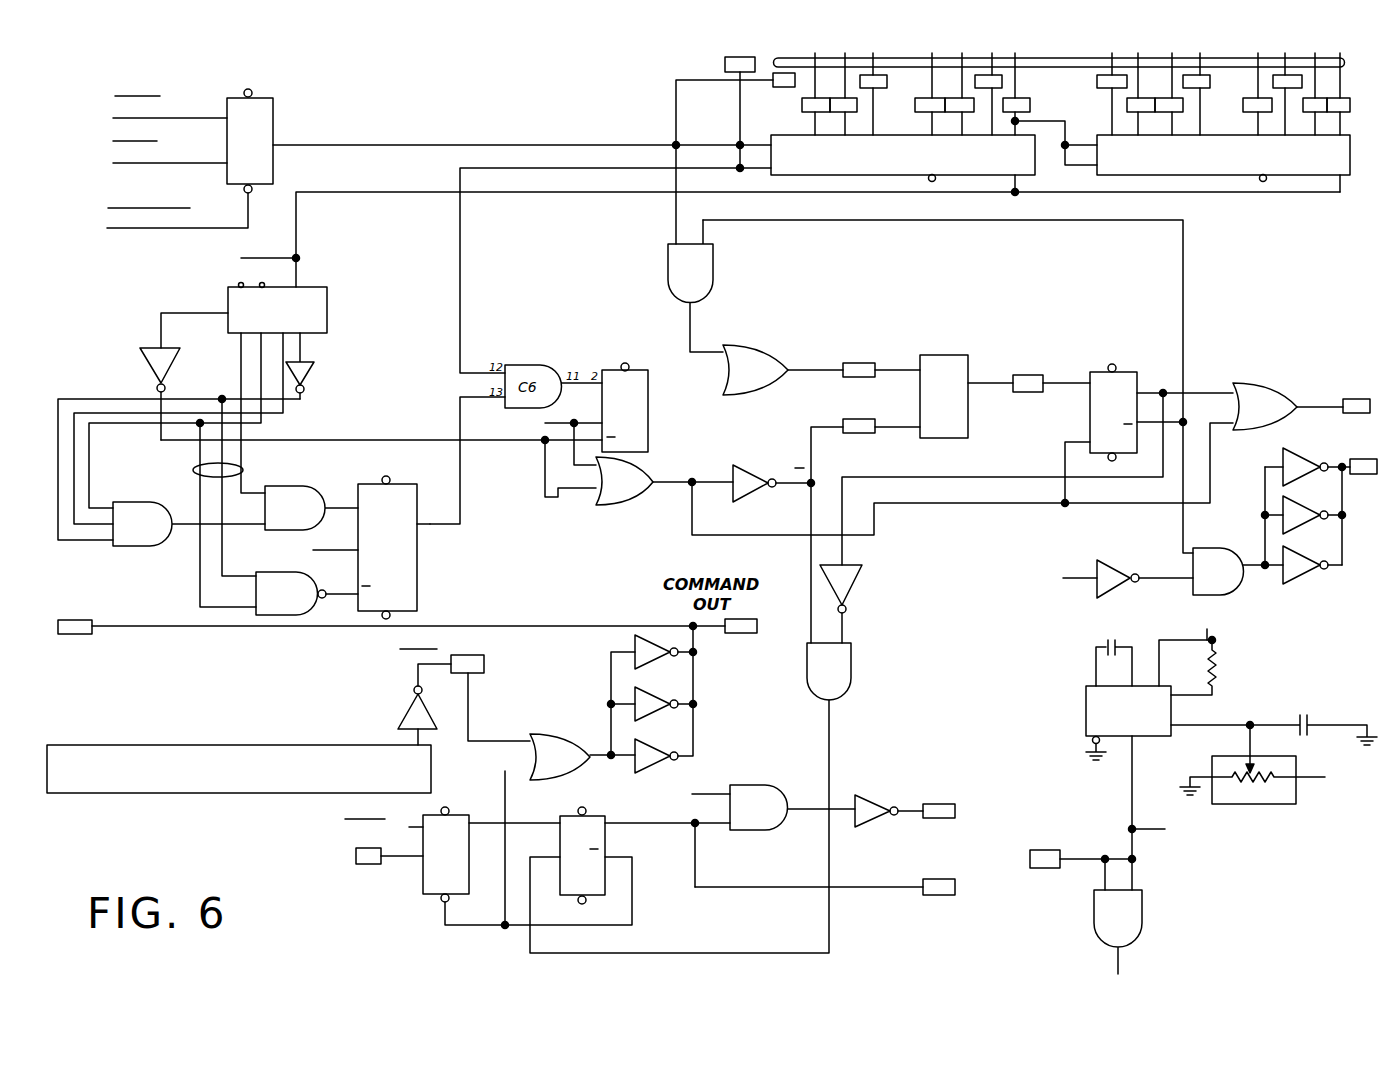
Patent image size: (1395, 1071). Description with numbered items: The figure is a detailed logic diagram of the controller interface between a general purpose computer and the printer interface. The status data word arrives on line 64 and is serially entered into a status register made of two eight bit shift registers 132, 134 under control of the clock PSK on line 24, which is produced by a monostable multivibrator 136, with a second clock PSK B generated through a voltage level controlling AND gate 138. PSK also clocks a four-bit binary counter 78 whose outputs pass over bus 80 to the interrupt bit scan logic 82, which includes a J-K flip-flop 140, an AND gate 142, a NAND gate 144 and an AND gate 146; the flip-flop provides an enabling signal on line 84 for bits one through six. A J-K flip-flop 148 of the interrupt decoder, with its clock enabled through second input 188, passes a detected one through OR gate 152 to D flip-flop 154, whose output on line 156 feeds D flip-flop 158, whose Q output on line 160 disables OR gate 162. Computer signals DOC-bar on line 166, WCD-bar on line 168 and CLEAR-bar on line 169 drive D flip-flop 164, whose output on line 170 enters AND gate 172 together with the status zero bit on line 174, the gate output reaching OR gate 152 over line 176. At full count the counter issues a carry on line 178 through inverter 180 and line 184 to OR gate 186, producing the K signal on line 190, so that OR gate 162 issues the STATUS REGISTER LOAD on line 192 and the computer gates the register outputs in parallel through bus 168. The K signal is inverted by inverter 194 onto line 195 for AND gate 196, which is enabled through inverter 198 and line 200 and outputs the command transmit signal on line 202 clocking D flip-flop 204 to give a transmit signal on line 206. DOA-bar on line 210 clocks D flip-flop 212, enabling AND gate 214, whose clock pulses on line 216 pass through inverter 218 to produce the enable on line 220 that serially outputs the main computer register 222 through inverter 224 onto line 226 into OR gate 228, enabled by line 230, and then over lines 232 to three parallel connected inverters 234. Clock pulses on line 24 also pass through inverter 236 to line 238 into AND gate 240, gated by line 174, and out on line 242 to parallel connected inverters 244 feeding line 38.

The clock line 24 is at (362, 192).
The clock output line 38 is at (1344, 496).
The status data word input line 64 is at (738, 106).
The four-bit binary counter 78 is at (327, 312).
The bus 80 is at (243, 468).
The interrupt bit scan logic 82 is at (420, 540).
The enabling signal line 84 is at (462, 492).
The eight bit shift register 132 is at (838, 177).
The eight bit shift register 134 is at (1172, 177).
The monostable multivibrator 136 is at (1078, 717).
The voltage level controlling AND gate 138 is at (1145, 906).
The J-K flip-flop 140 is at (391, 483).
The AND gate 142 is at (306, 492).
The NAND gate 144 is at (286, 574).
The AND gate 146 is at (312, 376).
The J-K flip-flop 148 is at (648, 424).
The OR gate 152 is at (793, 333).
The D flip-flop 154 is at (940, 355).
The Q output line 156 is at (993, 375).
The D flip-flop 158 is at (1090, 368).
The disabling signal line 160 is at (1160, 392).
The OR gate 162 is at (1255, 372).
The D flip-flop 164 is at (273, 110).
The DOC-bar line 166 is at (190, 118).
The WCD-bar line / bus 168 is at (186, 163).
The CLEAR-bar line 169 is at (216, 228).
The Q output line 170 is at (368, 145).
The AND gate 172 is at (664, 278).
The status word zero bit line / Q-bar line 174 is at (770, 87).
The output line 176 is at (697, 327).
The carry over signal line 178 is at (174, 313).
The inverter 180 is at (143, 374).
The first input line 184 is at (557, 498).
The OR gate 186 is at (630, 504).
The second input 188 is at (557, 452).
The K signal line 190 is at (674, 474).
The STATUS REGISTER LOAD line 192 is at (1316, 407).
The inverter 194 is at (756, 463).
The inverted K line 195 is at (810, 524).
The AND gate 196 is at (802, 682).
The inverter 198 is at (856, 590).
The enabling signal line 200 is at (855, 626).
The command transmit signal line 202 is at (840, 736).
The D flip-flop 204 is at (582, 808).
The transmit signal line 206 is at (626, 823).
The DOA-bar line 210 is at (394, 858).
The D flip-flop 212 is at (446, 809).
The AND gate 214 is at (773, 785).
The clock pulse line 216 is at (843, 794).
The inverter 218 is at (895, 801).
The output clock pulse enable signal line 220 is at (933, 804).
The main computer register 222 is at (237, 745).
The inverter 224 is at (405, 712).
The output data input line 226 is at (490, 740).
The OR gate 228 is at (565, 729).
The Q-bar output line 230 is at (506, 840).
The input lines 232 is at (608, 688).
The parallel connected inverters 234 is at (697, 680).
The inverter 236 is at (1122, 551).
The clock pulse input line 238 is at (1160, 582).
The AND gate 240 is at (1232, 595).
The output line 242 is at (1268, 570).
The parallel connected inverters 244 is at (1341, 514).